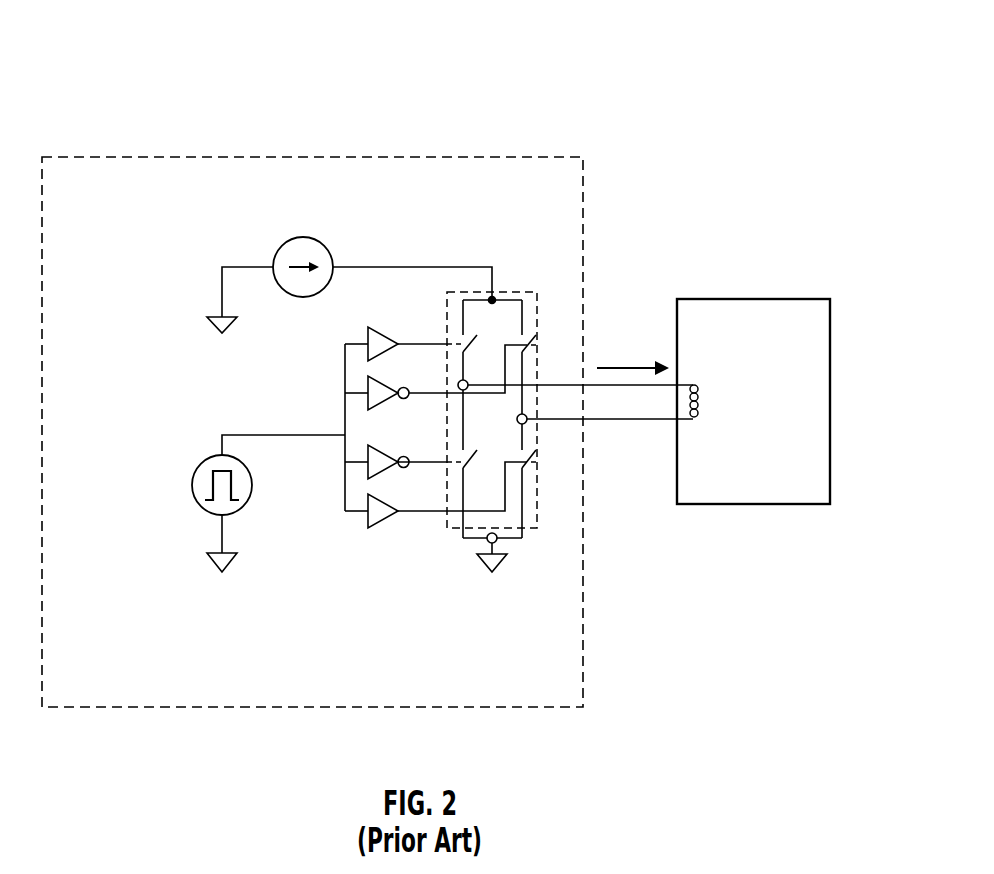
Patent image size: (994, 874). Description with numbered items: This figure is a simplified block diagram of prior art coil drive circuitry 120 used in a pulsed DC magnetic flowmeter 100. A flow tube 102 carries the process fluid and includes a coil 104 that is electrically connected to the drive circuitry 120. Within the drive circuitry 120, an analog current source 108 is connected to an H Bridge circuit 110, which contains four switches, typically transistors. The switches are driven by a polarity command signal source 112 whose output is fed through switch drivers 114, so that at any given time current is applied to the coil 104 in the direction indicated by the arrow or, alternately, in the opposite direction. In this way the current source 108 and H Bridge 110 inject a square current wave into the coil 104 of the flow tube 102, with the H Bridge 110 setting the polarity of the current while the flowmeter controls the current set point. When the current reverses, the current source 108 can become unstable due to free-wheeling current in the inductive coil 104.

The pulsed direct current magnetic flowmeter 100 is at (736, 41).
The flow tube 102 is at (753, 299).
The coil 104 is at (693, 383).
The analog current source 108 is at (333, 256).
The H Bridge circuit 110 is at (522, 292).
The polarity command signal source 112 is at (217, 455).
The switch drivers 114 is at (345, 405).
The coil drive circuitry 120 is at (145, 157).